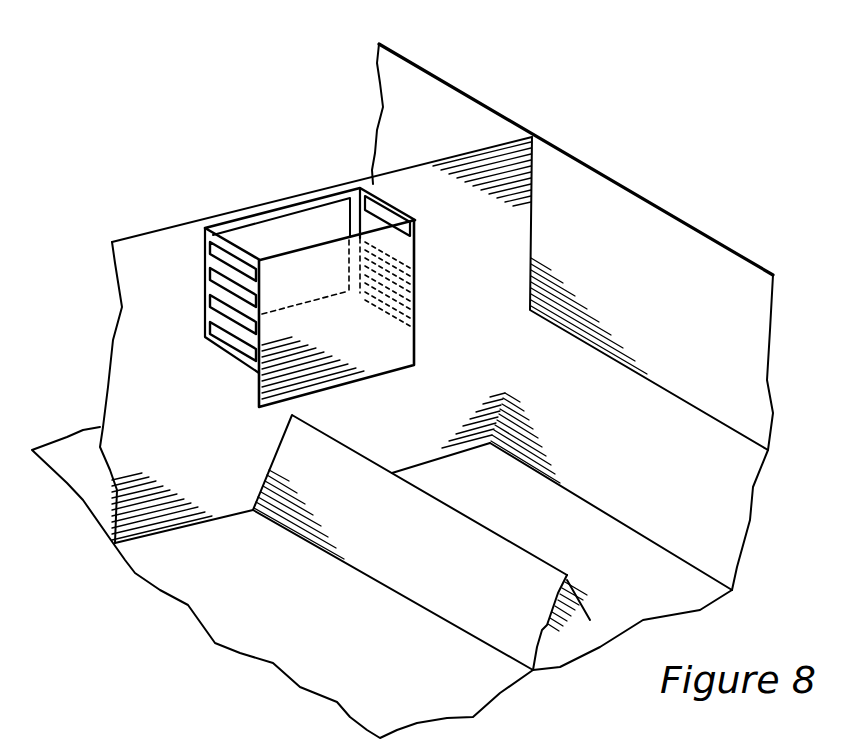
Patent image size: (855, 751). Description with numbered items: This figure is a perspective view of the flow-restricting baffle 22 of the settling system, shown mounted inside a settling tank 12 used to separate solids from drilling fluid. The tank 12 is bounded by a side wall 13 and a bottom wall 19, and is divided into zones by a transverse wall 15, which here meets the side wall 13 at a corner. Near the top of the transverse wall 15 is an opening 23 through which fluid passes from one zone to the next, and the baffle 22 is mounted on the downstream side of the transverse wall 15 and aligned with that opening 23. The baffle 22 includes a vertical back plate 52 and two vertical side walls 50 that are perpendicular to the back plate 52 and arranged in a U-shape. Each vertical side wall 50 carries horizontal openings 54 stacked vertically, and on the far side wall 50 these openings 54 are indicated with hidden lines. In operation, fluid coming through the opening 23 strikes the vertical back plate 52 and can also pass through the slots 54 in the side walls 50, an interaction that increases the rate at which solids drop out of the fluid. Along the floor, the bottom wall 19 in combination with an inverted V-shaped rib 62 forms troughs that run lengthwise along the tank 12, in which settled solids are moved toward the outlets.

The settling tank 12 is at (468, 94).
The side wall 13 is at (687, 260).
The transverse wall 15 is at (502, 142).
The bottom wall 19 is at (613, 556).
The flow-restricting baffle 22 is at (314, 257).
The opening 23 is at (306, 228).
The vertical side wall 50 is at (202, 245).
The vertical back plate 52 is at (367, 352).
The horizontal opening 54 is at (208, 323).
The inverted V-shaped rib 62 is at (468, 515).